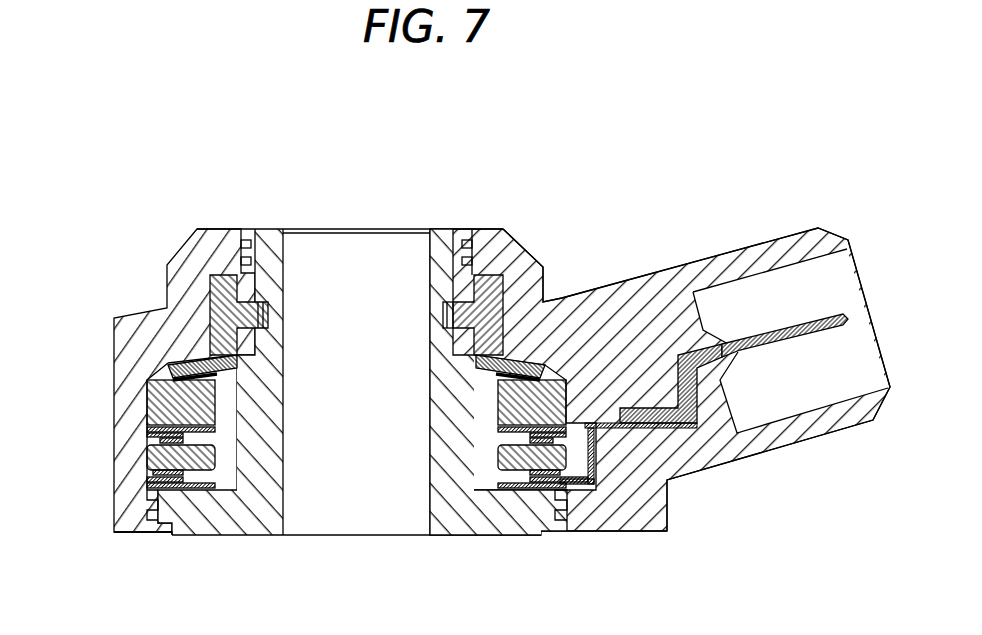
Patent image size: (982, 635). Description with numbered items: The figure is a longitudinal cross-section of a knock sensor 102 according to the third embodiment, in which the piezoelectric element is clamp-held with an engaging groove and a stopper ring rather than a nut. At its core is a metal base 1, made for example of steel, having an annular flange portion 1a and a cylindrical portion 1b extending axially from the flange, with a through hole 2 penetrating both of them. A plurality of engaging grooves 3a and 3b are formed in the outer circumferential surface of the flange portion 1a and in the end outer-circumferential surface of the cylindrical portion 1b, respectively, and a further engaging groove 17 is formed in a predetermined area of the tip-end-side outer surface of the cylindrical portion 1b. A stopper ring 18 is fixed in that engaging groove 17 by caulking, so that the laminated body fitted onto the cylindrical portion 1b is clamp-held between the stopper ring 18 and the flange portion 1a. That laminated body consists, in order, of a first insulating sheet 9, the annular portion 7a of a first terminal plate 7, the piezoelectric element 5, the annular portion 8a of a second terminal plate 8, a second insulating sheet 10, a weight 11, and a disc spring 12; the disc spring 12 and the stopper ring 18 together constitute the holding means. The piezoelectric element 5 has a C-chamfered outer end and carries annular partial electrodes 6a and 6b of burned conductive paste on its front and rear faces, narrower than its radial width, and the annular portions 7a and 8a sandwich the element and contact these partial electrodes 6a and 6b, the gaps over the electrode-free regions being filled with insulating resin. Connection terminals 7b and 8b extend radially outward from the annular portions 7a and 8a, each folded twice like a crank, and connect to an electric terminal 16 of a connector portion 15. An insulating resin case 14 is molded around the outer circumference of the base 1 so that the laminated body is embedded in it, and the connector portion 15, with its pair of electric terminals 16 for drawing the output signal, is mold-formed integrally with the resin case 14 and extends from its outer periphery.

The knock sensor 102 is at (125, 218).
The base 1 is at (390, 382).
The flange portion 1a is at (243, 495).
The cylindrical portion 1b is at (283, 425).
The through hole 2 is at (428, 536).
The engaging groove 3a is at (147, 518).
The engaging groove 3b is at (242, 252).
The piezoelectric element 5 is at (160, 455).
The partial electrode 6a is at (152, 477).
The partial electrode 6b is at (150, 437).
The first terminal plate 7 is at (522, 462).
The annular portion 7a is at (168, 532).
The connection terminal 7b is at (590, 436).
The second terminal plate 8 is at (520, 430).
The annular portion 8a is at (180, 428).
The connection terminal 8b is at (565, 498).
The first insulating sheet 9 is at (152, 486).
The second insulating sheet 10 is at (214, 372).
The weight 11 is at (520, 404).
The disc spring 12 is at (516, 356).
The resin case 14 is at (166, 318).
The connector portion 15 is at (670, 290).
The electric terminal 16 is at (808, 336).
The engaging groove 17 is at (443, 306).
The stopper ring 18 is at (538, 270).